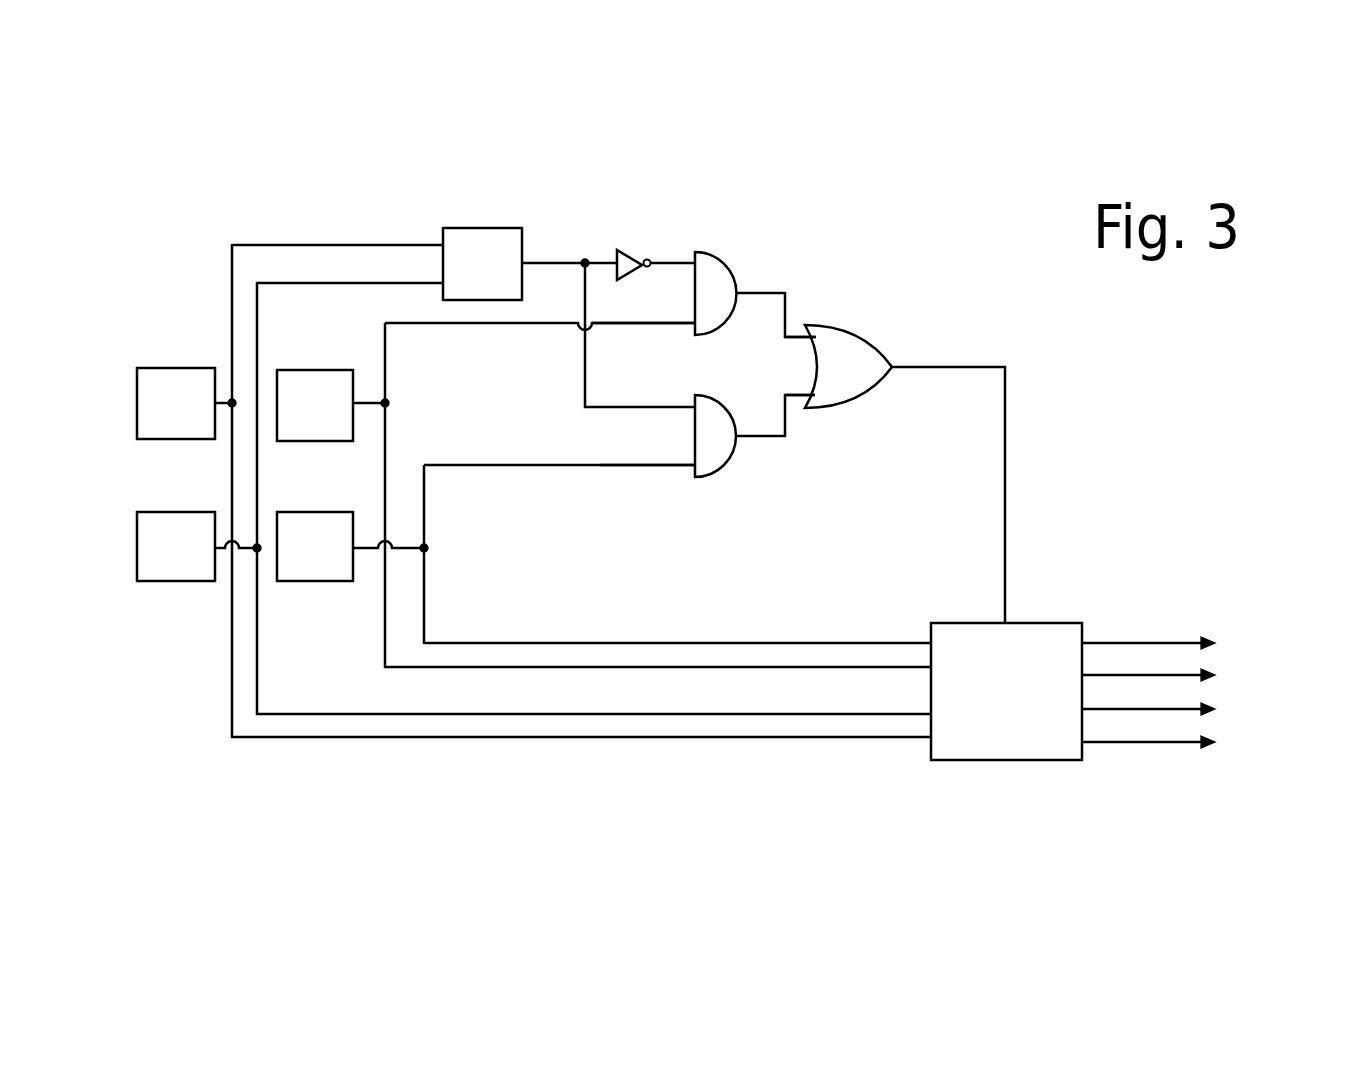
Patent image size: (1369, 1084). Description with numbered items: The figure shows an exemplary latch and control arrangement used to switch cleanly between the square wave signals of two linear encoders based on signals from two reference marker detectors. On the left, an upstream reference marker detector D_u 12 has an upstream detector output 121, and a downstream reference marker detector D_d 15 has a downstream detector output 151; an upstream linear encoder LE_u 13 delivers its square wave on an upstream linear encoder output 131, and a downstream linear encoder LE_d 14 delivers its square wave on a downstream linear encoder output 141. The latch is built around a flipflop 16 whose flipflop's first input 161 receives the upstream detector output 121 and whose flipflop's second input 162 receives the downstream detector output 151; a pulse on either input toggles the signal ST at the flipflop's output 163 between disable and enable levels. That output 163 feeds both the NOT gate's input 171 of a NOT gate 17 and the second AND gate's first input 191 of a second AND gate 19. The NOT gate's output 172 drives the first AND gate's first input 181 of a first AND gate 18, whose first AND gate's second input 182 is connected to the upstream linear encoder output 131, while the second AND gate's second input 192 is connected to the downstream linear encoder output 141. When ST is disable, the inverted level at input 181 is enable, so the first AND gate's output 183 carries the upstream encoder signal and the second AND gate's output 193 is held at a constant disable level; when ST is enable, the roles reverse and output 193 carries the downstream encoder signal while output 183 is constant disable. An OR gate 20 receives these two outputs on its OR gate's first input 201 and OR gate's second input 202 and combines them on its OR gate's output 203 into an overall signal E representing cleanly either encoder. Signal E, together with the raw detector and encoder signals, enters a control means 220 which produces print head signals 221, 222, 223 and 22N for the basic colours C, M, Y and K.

The upstream reference marker detector 12 is at (170, 387).
The upstream detector output 121 is at (228, 367).
The upstream linear encoder 13 is at (320, 377).
The upstream linear encoder output 131 is at (362, 397).
The downstream linear encoder 14 is at (300, 570).
The downstream linear encoder output 141 is at (368, 542).
The downstream reference marker detector 15 is at (170, 570).
The downstream detector output 151 is at (222, 565).
The flipflop 16 is at (488, 240).
The flipflop's first input 161 is at (418, 242).
The flipflop's second input 162 is at (427, 284).
The flipflop's output 163 is at (543, 262).
The NOT gate 17 is at (625, 248).
The NOT gate's input 171 is at (610, 260).
The NOT gate's output 172 is at (650, 257).
The first AND gate 18 is at (720, 283).
The first AND gate's first input 181 is at (683, 260).
The first AND gate's second input 182 is at (683, 328).
The first AND gate's output 183 is at (750, 292).
The second AND gate 19 is at (712, 435).
The second AND gate's first input 191 is at (680, 407).
The second AND gate's second input 192 is at (690, 470).
The second AND gate's output 193 is at (763, 442).
The OR gate 20 is at (848, 363).
The OR gate's first input 201 is at (795, 335).
The OR gate's second input 202 is at (793, 400).
The OR gate's output 203 is at (908, 365).
The control means 220 is at (998, 702).
The print head signal 221 is at (1201, 644).
The print head signal 222 is at (1204, 676).
The print head signal 223 is at (1200, 710).
The print head signal 22N is at (1202, 743).